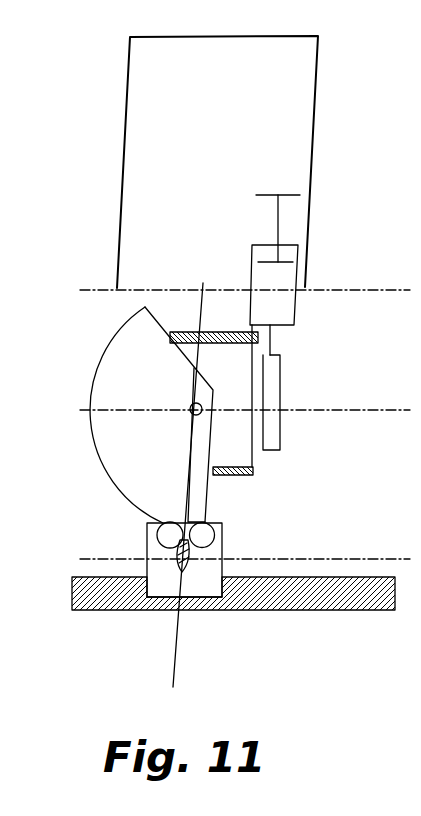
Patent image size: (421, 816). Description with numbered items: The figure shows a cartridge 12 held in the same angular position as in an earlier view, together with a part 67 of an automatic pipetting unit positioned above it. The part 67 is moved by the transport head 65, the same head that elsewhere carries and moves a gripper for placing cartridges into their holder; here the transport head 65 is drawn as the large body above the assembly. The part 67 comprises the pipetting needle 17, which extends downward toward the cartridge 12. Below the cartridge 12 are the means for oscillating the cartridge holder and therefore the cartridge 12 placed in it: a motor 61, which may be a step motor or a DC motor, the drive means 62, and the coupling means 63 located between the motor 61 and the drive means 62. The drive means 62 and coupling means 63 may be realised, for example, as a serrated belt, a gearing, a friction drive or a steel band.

The transport head 65 is at (314, 132).
The part of a pipetting unit 67 is at (304, 287).
The pipetting needle 17 is at (268, 397).
The cartridge 12 is at (257, 468).
The drive means 62 is at (120, 494).
The coupling means 63 is at (222, 528).
The motor 61 is at (197, 587).